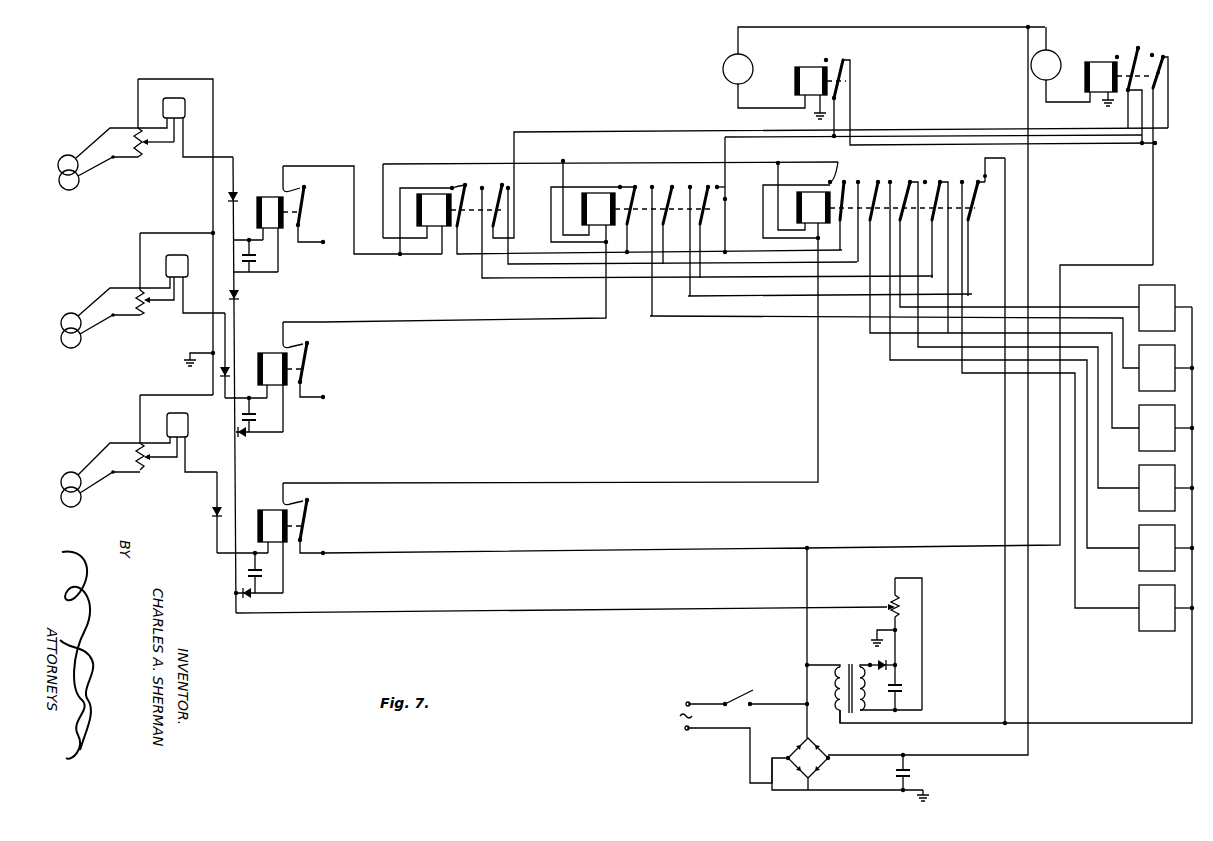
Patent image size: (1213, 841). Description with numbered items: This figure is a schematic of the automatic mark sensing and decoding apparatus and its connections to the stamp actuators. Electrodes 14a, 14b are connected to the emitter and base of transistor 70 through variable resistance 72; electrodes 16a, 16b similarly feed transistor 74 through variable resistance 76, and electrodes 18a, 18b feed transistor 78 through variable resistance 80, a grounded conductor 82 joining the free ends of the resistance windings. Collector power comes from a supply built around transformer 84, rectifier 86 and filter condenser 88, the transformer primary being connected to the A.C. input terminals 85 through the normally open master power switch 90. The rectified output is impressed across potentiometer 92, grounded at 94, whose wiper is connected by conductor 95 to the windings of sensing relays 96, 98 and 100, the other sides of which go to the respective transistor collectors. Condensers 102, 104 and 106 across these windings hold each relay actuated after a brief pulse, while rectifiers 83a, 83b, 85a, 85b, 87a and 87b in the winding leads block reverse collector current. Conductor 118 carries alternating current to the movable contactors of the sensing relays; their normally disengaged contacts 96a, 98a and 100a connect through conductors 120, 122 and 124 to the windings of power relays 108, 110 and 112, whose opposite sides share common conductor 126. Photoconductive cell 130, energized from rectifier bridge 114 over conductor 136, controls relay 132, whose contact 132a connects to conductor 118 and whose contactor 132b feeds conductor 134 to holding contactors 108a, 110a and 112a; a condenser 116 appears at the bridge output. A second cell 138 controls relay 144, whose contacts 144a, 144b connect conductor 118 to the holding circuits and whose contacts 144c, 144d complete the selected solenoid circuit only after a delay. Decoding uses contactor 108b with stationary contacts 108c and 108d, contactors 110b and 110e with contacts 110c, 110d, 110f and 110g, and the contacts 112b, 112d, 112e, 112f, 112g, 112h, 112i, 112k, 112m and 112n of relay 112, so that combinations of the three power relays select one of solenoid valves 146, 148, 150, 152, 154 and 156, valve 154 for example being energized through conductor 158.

The electrode 14a is at (61, 158).
The electrode 14b is at (62, 188).
The electrode 16a is at (63, 316).
The electrode 16b is at (64, 346).
The electrode 18a is at (64, 475).
The electrode 18b is at (64, 505).
The transistor 70 is at (178, 98).
The variable resistance 72 is at (144, 150).
The transistor 74 is at (176, 255).
The variable resistance 76 is at (144, 308).
The transistor 78 is at (184, 420).
The variable resistance 80 is at (145, 467).
The conductor 82 is at (213, 130).
The rectifier 83a is at (228, 197).
The rectifier 83b is at (238, 293).
The transformer 84 is at (846, 663).
The A.C. input terminals 85 is at (678, 728).
The rectifier 85a is at (220, 374).
The rectifier 85b is at (246, 437).
The rectifier 86 is at (886, 664).
The rectifier 87a is at (212, 512).
The rectifier 87b is at (251, 595).
The filter condenser 88 is at (903, 688).
The master power switch 90 is at (744, 690).
The potentiometer 92 is at (890, 600).
The ground 94 is at (877, 637).
The conductor 95 is at (424, 610).
The sensing relay 96 is at (268, 196).
The normally disengaged contact 96a is at (305, 186).
The sensing relay 98 is at (270, 352).
The normally disengaged contact 98a is at (307, 342).
The sensing relay 100 is at (267, 509).
The normally disengaged contact 100a is at (305, 501).
The condenser 102 is at (256, 259).
The condenser 104 is at (256, 421).
The condenser 106 is at (268, 570).
The power relay 108 is at (430, 192).
The movable holding circuit contactor 108a is at (456, 180).
The movable contactor 108b is at (501, 183).
The stationary contact 108c is at (510, 187).
The stationary contact 108d is at (482, 185).
The power relay 110 is at (598, 192).
The movable holding circuit contactor 110a is at (633, 182).
The movable contactor 110b is at (671, 184).
The relay contact 110c is at (690, 184).
The relay contact 110d is at (652, 184).
The movable contactor 110e is at (728, 197).
The relay contact 110f is at (719, 186).
The relay contact 110g is at (708, 185).
The power relay 112 is at (826, 188).
The movable holding circuit contactor 112a is at (838, 174).
The movable contact 112b is at (858, 180).
The relay contact 112d is at (844, 181).
The movable contact 112e is at (891, 180).
The relay contact 112f is at (910, 181).
The relay contact 112g is at (878, 181).
The movable contact 112h is at (926, 180).
The relay contact 112i is at (940, 181).
The movable contact 112k is at (963, 184).
The relay contact 112m is at (990, 176).
The relay contact 112n is at (977, 180).
The rectifier bridge 114 is at (847, 764).
The filter capacitor 116 is at (927, 792).
The conductor 118 is at (1058, 145).
The conductor 120 is at (364, 256).
The conductor 122 is at (476, 320).
The conductor 124 is at (533, 482).
The common conductor 126 is at (555, 160).
The cadmium sulfide photoelectric cell 130 is at (722, 69).
The relay 132 is at (809, 66).
The normally disengaged contact 132a is at (846, 58).
The movable contactor 132b is at (840, 92).
The conductor 134 is at (725, 215).
The conductor 136 is at (1030, 216).
The cadmium sulfide cell 138 is at (1055, 52).
The relay 144 is at (1100, 60).
The relay contact 144a is at (1139, 47).
The relay contact 144b is at (1130, 91).
The relay contact 144c is at (1165, 55).
The relay contact 144d is at (1160, 73).
The solenoid valve 146 is at (1165, 308).
The solenoid valve 148 is at (1166, 368).
The solenoid valve 150 is at (1166, 428).
The solenoid valve 152 is at (1166, 488).
The solenoid valve 154 is at (1166, 548).
The solenoid valve 156 is at (1166, 608).
The conductor 158 is at (1086, 728).